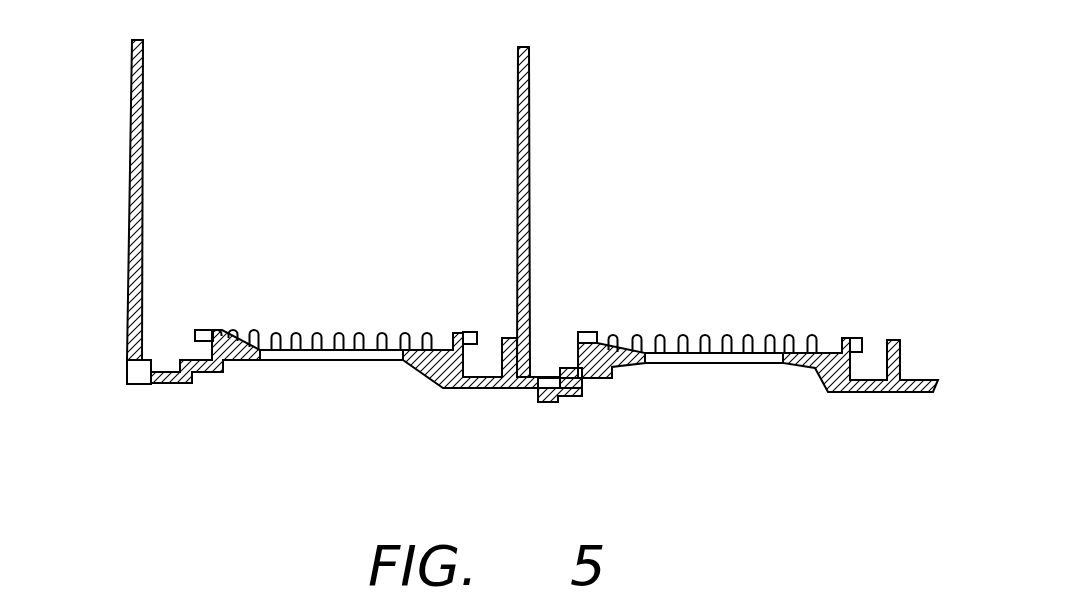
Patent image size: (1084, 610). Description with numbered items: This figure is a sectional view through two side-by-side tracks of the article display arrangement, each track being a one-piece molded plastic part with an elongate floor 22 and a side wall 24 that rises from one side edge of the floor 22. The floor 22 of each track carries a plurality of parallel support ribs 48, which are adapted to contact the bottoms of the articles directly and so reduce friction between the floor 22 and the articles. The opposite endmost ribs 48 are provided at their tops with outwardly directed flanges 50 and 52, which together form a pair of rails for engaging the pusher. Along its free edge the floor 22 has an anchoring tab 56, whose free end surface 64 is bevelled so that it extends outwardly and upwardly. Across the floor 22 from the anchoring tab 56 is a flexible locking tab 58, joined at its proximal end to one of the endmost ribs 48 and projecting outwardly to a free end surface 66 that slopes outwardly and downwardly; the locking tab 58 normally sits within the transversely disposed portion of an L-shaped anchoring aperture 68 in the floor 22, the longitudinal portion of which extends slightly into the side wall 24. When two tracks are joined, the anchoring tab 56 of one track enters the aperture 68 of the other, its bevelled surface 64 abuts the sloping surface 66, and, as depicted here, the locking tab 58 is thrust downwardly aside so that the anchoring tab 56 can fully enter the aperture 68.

The floor 22 is at (405, 360).
The side wall 24 is at (143, 112).
The support ribs 48 is at (230, 328).
The flange 50 is at (197, 328).
The flange 52 is at (480, 328).
The anchoring tab 56 is at (670, 423).
The locking tab 58 is at (553, 398).
The bevelled free end surface 64 is at (560, 338).
The free end surface 66 is at (533, 392).
The anchoring aperture 68 is at (135, 387).